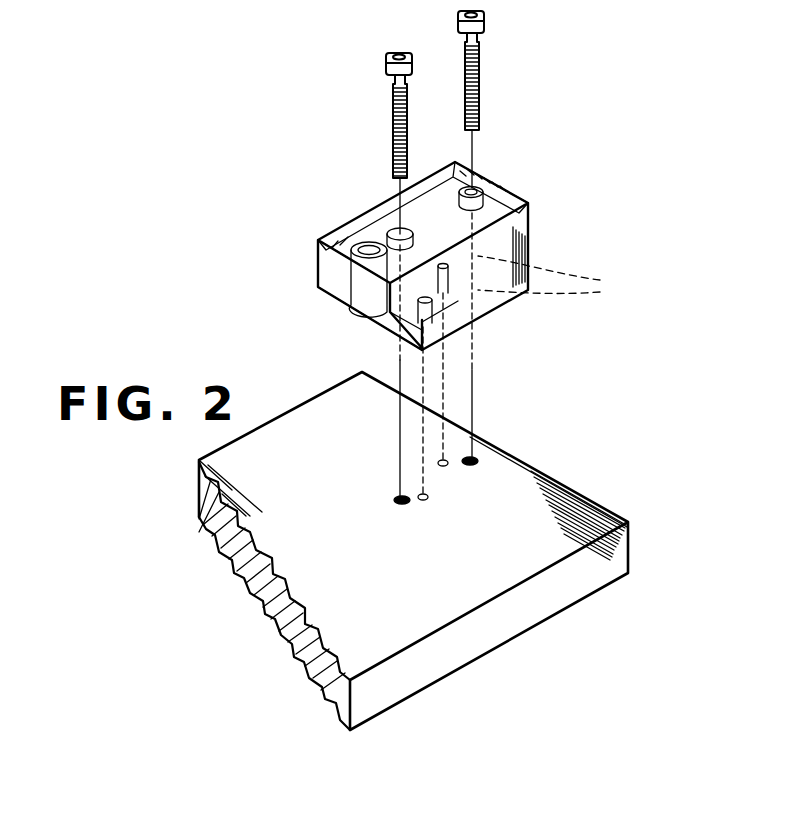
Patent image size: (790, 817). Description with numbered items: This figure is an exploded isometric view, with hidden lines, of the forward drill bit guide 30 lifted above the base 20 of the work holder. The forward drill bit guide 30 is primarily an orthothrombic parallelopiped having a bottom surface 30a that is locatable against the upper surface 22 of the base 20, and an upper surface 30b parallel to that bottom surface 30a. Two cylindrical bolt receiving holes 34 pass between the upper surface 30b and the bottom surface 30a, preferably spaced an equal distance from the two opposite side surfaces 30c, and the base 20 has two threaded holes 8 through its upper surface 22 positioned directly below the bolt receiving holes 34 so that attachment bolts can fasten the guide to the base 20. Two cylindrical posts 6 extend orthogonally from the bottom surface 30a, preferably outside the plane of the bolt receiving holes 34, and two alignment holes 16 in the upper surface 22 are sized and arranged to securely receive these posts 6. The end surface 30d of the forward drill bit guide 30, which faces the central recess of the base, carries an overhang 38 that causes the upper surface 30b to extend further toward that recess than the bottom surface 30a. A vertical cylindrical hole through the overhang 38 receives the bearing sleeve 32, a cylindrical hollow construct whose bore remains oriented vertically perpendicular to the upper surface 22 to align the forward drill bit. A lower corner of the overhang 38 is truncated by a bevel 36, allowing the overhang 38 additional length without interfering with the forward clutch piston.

The cylindrical posts 6 is at (445, 335).
The threaded holes 8 is at (461, 22).
The alignment holes 16 is at (472, 465).
The base 20 is at (558, 468).
The upper surface 22 is at (560, 533).
The forward drill bit guide 30 is at (546, 199).
The bottom surface 30a is at (495, 308).
The upper surface 30b is at (493, 187).
The side surfaces 30c is at (362, 240).
The end surface 30d is at (318, 283).
The sleeve 32 is at (352, 246).
The bolt receiving holes 34 is at (582, 282).
The bevel 36 is at (395, 320).
The overhang 38 is at (318, 254).